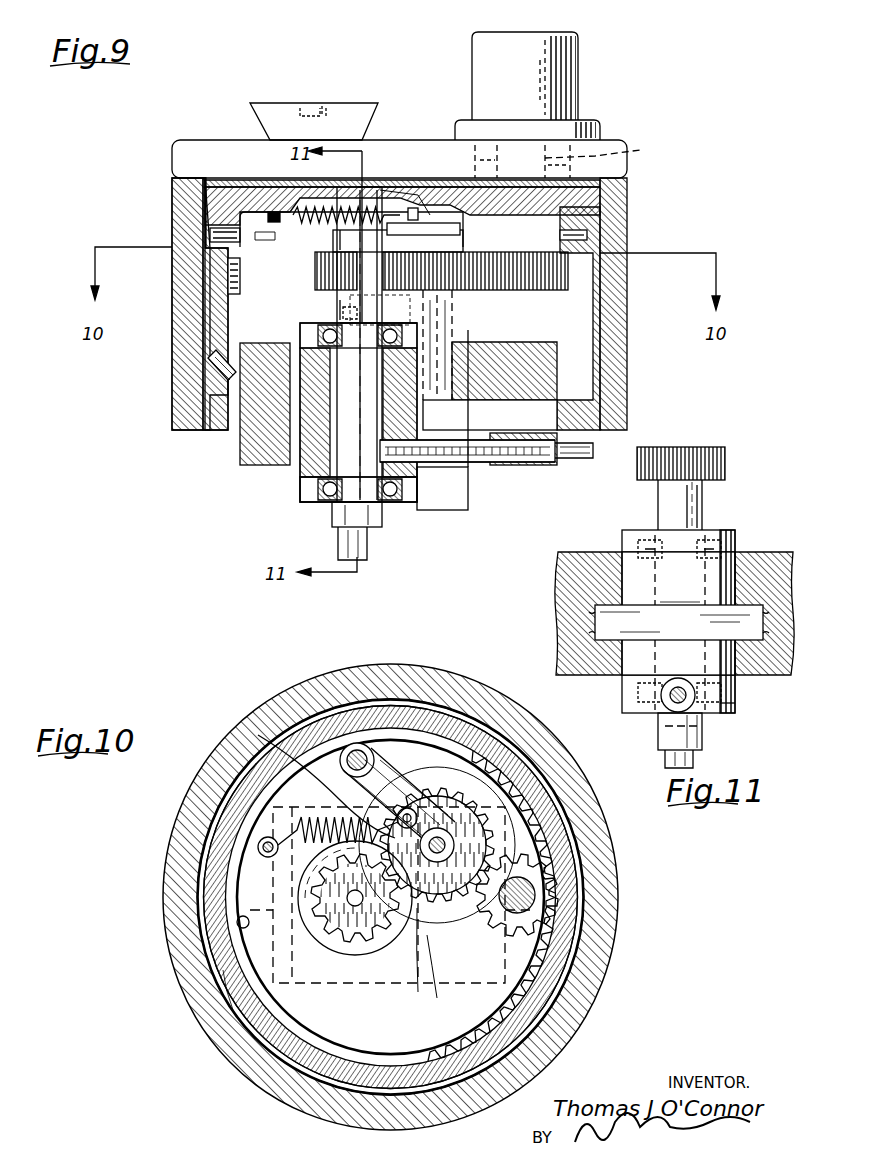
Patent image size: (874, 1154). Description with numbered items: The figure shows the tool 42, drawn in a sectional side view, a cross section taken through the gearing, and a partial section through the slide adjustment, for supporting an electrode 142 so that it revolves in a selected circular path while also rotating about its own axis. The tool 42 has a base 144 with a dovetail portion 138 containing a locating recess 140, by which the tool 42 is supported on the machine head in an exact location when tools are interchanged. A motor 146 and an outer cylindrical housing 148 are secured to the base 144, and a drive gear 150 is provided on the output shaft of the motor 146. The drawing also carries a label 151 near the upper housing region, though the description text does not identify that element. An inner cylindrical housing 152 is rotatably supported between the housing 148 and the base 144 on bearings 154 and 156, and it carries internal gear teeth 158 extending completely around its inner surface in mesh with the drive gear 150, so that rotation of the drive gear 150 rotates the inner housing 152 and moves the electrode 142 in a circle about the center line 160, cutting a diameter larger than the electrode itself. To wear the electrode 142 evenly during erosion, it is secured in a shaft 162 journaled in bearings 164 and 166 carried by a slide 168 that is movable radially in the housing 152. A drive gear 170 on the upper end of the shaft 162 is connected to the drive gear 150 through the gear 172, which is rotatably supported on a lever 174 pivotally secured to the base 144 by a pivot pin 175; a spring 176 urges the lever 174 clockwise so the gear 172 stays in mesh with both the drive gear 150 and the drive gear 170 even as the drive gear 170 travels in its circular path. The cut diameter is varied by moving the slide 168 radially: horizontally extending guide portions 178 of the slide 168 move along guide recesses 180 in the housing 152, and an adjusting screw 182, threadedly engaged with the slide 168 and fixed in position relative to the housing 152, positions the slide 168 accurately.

In FIG. 9, the tool 42 is at (696, 122).
In FIG. 10, the tool 42 is at (182, 1050).
In FIG. 9, the dovetail portion 138 is at (266, 103).
In FIG. 9, the locating recess 140 is at (324, 102).
In FIG. 9, the electrode 142 is at (367, 552).
In FIG. 11, the electrode 142 is at (693, 760).
In FIG. 9, the base 144 is at (172, 154).
In FIG. 9, the motor 146 is at (572, 74).
In FIG. 9, the outer cylindrical housing 148 is at (430, 303).
In FIG. 10, the outer cylindrical housing 148 is at (578, 955).
In FIG. 9, the drive gear 150 is at (516, 288).
In FIG. 10, the drive gear 150 is at (520, 905).
In FIG. 9, the inner wall 151 is at (612, 150).
In FIG. 10, the inner wall 151 is at (560, 900).
In FIG. 9, the inner cylindrical housing 152 is at (240, 460).
In FIG. 11, the inner cylindrical housing 152 is at (595, 610).
In FIG. 10, the inner cylindrical housing 152 is at (320, 1090).
In FIG. 9, the bearing 154 is at (215, 370).
In FIG. 9, the bearing 156 is at (212, 232).
In FIG. 9, the internal gear teeth 158 is at (228, 268).
In FIG. 10, the internal gear teeth 158 is at (566, 975).
In FIG. 10, the center line 160 is at (437, 960).
In FIG. 9, the shaft 162 is at (380, 522).
In FIG. 11, the shaft 162 is at (658, 748).
In FIG. 10, the shaft 162 is at (238, 912).
In FIG. 9, the bearing 164 is at (305, 494).
In FIG. 11, the bearing 164 is at (735, 704).
In FIG. 9, the bearing 166 is at (340, 319).
In FIG. 11, the bearing 166 is at (648, 538).
In FIG. 9, the slide 168 is at (300, 340).
In FIG. 11, the slide 168 is at (738, 540).
In FIG. 10, the slide 168 is at (420, 925).
In FIG. 9, the drive gear 170 is at (316, 272).
In FIG. 11, the drive gear 170 is at (726, 462).
In FIG. 10, the drive gear 170 is at (360, 925).
In FIG. 9, the gear 172 is at (470, 292).
In FIG. 10, the gear 172 is at (490, 842).
In FIG. 9, the lever 174 is at (420, 232).
In FIG. 10, the lever 174 is at (395, 815).
In FIG. 9, the pivot pin 175 is at (385, 188).
In FIG. 10, the pivot pin 175 is at (275, 740).
In FIG. 9, the spring 176 is at (318, 232).
In FIG. 10, the spring 176 is at (340, 790).
In FIG. 11, the guide portions 178 is at (595, 612).
In FIG. 11, the guide recesses 180 is at (640, 622).
In FIG. 9, the adjusting screw 182 is at (578, 462).
In FIG. 11, the adjusting screw 182 is at (676, 705).